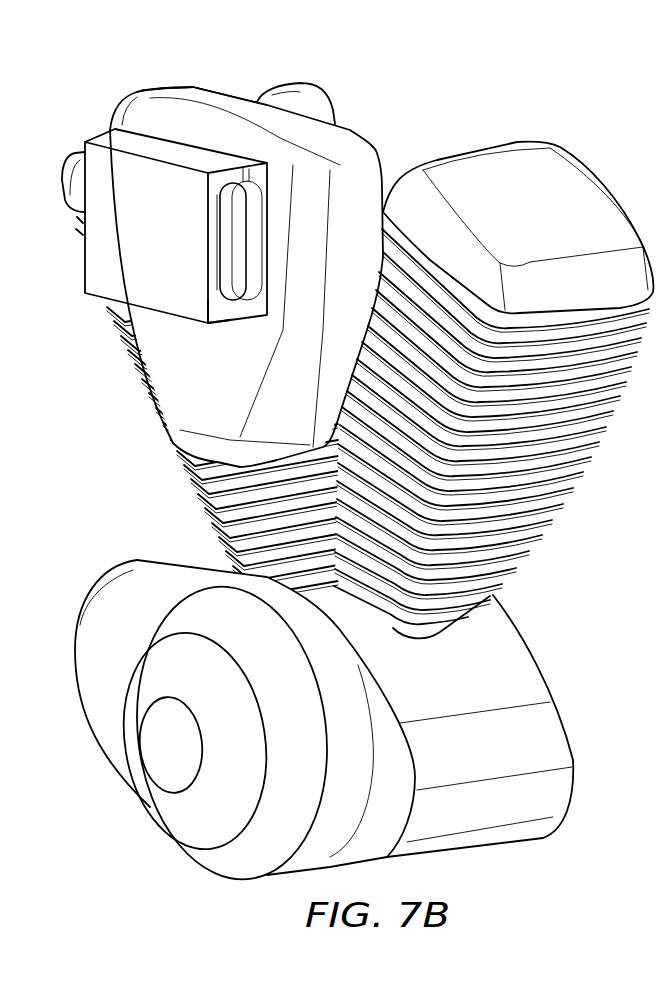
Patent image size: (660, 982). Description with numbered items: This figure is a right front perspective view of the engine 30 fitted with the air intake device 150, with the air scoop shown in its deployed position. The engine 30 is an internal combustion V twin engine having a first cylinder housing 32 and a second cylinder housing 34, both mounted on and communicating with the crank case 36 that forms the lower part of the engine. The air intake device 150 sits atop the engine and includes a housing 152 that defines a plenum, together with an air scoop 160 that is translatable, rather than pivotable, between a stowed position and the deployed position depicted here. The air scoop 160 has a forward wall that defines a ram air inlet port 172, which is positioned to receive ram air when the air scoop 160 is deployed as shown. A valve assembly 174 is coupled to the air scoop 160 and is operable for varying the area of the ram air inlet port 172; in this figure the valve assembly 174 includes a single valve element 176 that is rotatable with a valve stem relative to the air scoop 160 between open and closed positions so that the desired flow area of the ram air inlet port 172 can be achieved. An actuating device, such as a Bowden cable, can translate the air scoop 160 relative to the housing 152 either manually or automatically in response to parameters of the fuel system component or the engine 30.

The engine 30 is at (288, 725).
The first cylinder housing 32 is at (597, 183).
The second cylinder housing 34 is at (292, 83).
The crank case 36 is at (177, 826).
The air intake device 150 is at (284, 248).
The housing 152 is at (208, 97).
The air scoop 160 is at (150, 258).
The ram air inlet port 172 is at (237, 253).
The valve assembly 174 is at (214, 303).
The valve element 176 is at (238, 272).